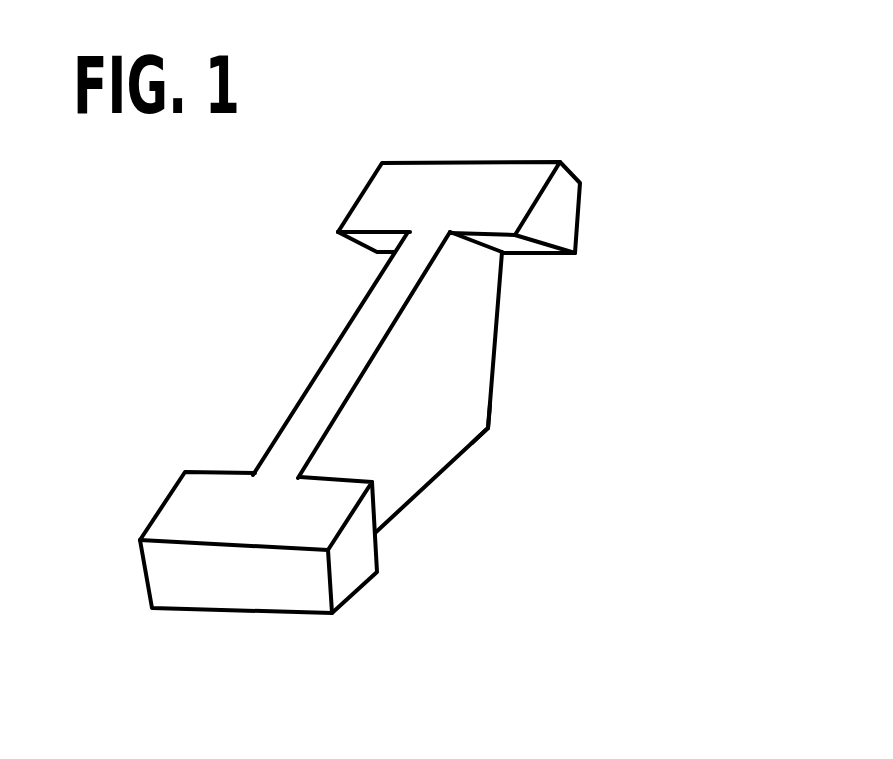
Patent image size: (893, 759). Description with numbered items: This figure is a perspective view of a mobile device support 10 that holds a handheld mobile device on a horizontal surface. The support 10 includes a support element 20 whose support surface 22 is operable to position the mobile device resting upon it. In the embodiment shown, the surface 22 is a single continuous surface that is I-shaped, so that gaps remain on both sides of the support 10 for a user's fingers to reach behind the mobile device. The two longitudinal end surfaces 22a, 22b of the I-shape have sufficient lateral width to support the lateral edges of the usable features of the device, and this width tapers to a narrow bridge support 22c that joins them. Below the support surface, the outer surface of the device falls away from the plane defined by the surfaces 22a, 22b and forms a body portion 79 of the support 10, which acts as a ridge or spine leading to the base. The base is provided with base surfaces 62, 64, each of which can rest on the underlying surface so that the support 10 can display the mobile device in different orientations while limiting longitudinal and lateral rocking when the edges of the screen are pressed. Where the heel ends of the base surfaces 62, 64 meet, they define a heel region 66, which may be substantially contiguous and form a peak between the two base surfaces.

The mobile device support 10 is at (382, 103).
The support element 20 is at (563, 213).
The support surface 22 is at (275, 472).
The longitudinal end surface 22a is at (487, 183).
The longitudinal end surface 22b is at (317, 510).
The narrow bridge support 22c is at (352, 345).
The base surface 62 is at (437, 498).
The base surface 64 is at (502, 342).
The heel region 66 is at (497, 435).
The body portion 79 is at (442, 397).